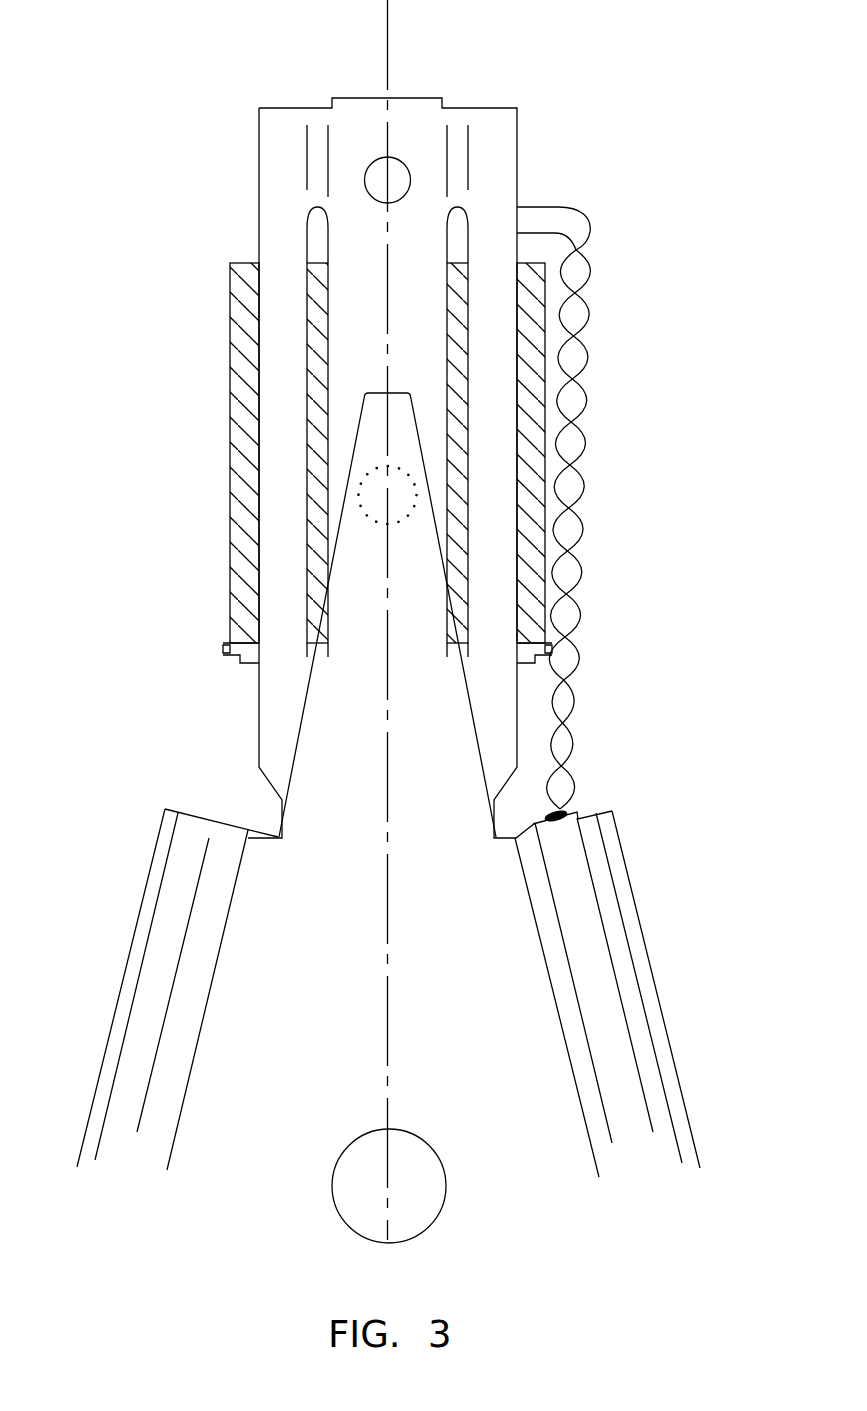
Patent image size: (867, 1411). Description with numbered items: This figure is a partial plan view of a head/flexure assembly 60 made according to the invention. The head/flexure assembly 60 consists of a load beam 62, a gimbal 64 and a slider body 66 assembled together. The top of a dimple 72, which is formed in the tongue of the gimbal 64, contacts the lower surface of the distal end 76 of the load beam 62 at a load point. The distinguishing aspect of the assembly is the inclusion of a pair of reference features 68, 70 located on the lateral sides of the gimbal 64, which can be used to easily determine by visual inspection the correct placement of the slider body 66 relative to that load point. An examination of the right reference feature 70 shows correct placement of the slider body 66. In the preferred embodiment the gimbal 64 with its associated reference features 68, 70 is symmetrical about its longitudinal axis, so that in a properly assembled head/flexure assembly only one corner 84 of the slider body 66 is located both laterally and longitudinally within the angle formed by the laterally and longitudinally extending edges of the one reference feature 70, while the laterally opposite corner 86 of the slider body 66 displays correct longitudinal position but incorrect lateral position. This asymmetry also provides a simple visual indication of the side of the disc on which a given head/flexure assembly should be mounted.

The head/flexure assembly 60 is at (675, 236).
The load beam 62 is at (492, 895).
The gimbal 64 is at (447, 167).
The slider body 66 is at (547, 337).
The reference feature 68 is at (253, 649).
The reference feature 70 is at (524, 655).
The dimple 72 is at (398, 488).
The distal end 76 is at (369, 428).
The corner 84 is at (550, 660).
The corner 86 is at (232, 655).